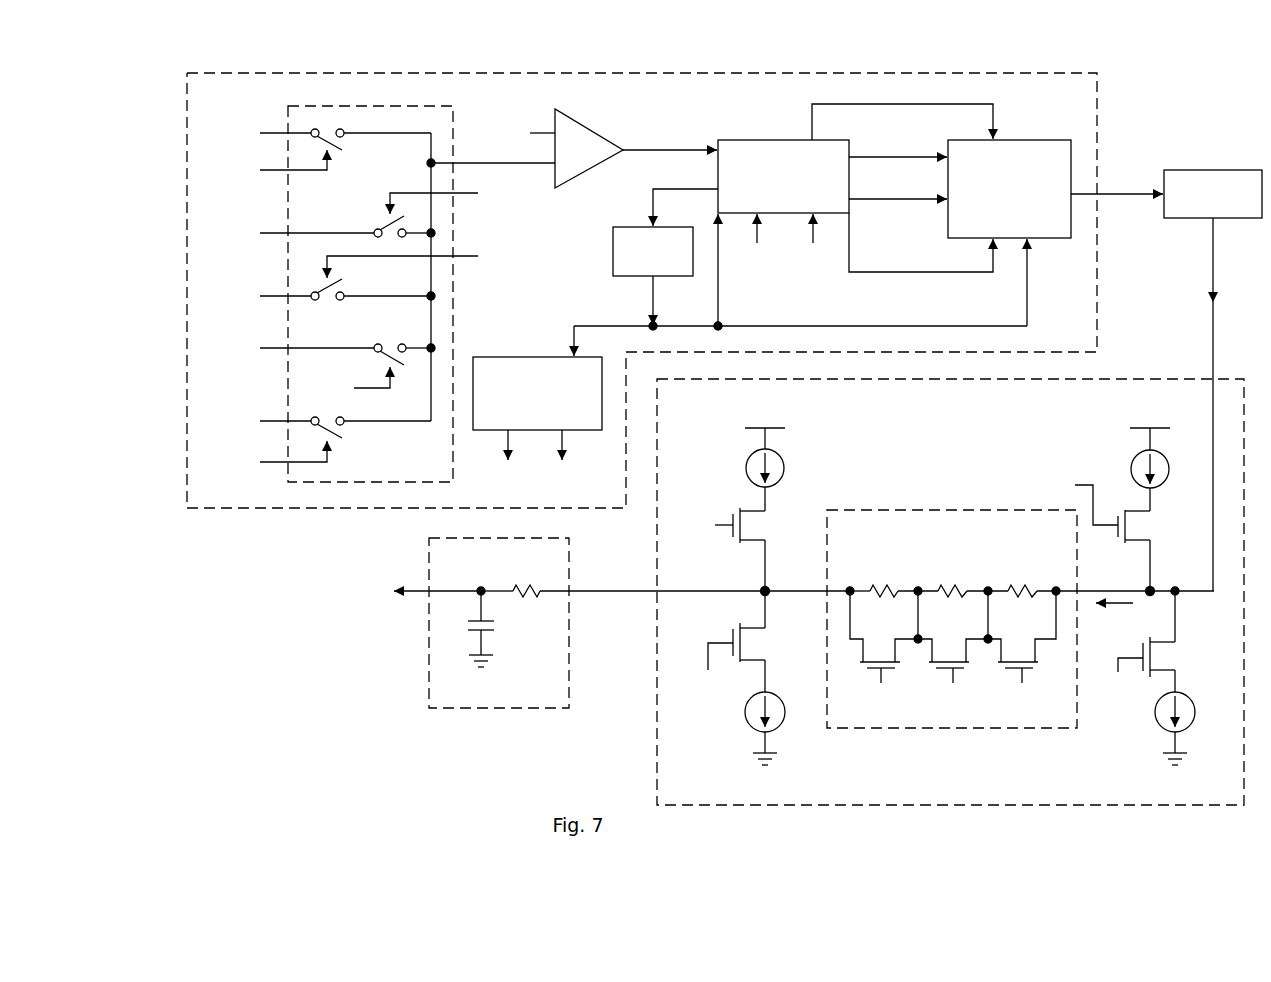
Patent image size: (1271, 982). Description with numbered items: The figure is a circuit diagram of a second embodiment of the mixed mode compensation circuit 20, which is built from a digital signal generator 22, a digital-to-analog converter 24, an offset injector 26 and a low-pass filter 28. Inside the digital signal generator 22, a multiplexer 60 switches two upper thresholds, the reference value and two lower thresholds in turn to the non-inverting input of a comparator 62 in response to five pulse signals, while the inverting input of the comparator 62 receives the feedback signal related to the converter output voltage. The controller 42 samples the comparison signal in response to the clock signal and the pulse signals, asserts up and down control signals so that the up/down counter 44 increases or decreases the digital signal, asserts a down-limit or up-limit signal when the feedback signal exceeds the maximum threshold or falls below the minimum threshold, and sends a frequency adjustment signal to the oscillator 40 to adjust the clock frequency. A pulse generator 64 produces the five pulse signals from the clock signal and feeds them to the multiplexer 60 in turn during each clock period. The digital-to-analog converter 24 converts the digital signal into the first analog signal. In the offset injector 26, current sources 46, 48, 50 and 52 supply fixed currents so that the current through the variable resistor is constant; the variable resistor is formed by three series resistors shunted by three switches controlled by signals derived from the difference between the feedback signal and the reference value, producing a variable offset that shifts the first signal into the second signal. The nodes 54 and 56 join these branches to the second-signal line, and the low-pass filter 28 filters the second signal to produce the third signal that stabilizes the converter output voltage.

The mixed mode compensation circuit 20 is at (280, 753).
The digital signal generator 22 is at (1097, 285).
The digital-to-analog converter 24 is at (1213, 170).
The offset injector 26 is at (1130, 379).
The low-pass filter 28 is at (429, 632).
The oscillator 40 is at (613, 252).
The controller 42 is at (762, 140).
The up/down counter 44 is at (1033, 140).
The current source 46 is at (1131, 465).
The current source 48 is at (1157, 718).
The current source 50 is at (784, 468).
The current source 52 is at (747, 718).
The node 54 is at (1147, 589).
The node 56 is at (767, 589).
The multiplexer 60 is at (453, 310).
The comparator 62 is at (595, 128).
The pulse generator 64 is at (520, 357).